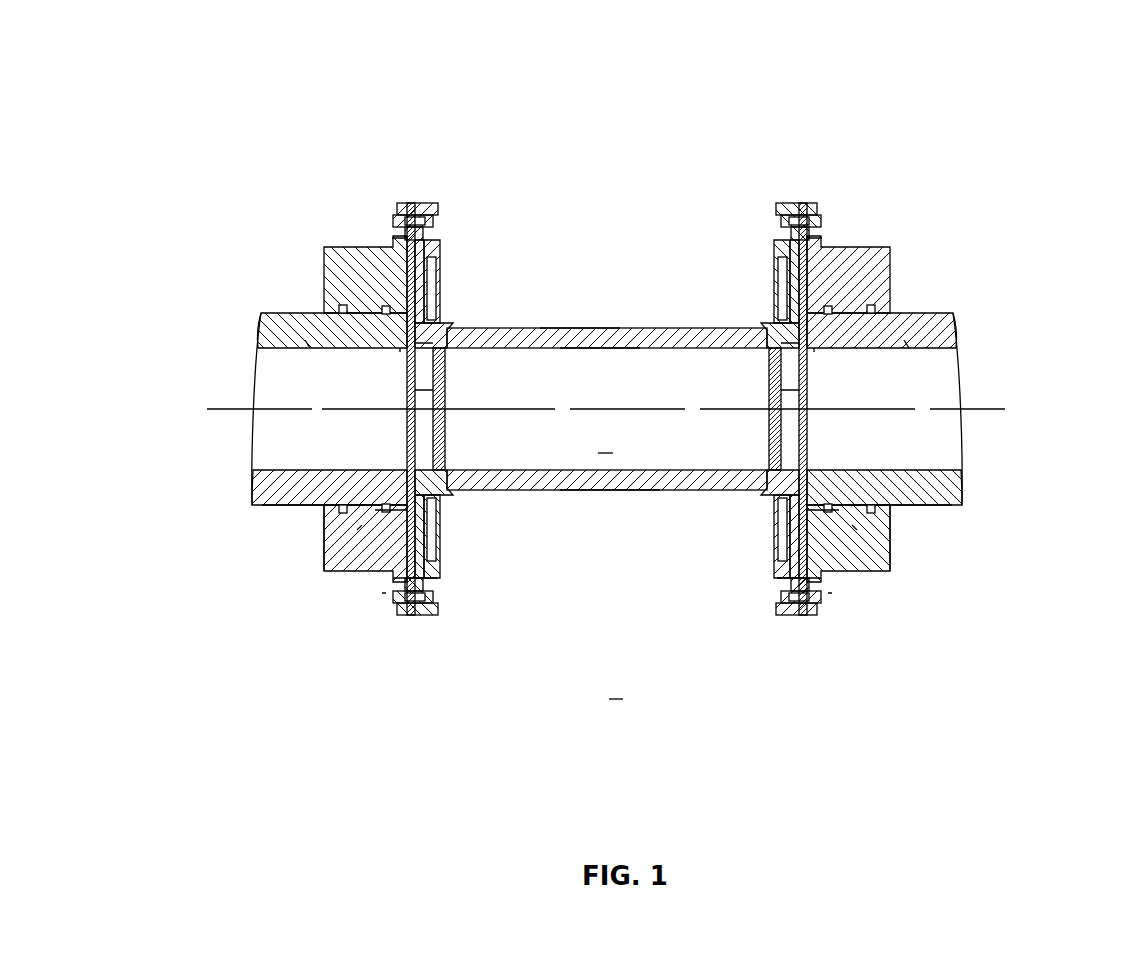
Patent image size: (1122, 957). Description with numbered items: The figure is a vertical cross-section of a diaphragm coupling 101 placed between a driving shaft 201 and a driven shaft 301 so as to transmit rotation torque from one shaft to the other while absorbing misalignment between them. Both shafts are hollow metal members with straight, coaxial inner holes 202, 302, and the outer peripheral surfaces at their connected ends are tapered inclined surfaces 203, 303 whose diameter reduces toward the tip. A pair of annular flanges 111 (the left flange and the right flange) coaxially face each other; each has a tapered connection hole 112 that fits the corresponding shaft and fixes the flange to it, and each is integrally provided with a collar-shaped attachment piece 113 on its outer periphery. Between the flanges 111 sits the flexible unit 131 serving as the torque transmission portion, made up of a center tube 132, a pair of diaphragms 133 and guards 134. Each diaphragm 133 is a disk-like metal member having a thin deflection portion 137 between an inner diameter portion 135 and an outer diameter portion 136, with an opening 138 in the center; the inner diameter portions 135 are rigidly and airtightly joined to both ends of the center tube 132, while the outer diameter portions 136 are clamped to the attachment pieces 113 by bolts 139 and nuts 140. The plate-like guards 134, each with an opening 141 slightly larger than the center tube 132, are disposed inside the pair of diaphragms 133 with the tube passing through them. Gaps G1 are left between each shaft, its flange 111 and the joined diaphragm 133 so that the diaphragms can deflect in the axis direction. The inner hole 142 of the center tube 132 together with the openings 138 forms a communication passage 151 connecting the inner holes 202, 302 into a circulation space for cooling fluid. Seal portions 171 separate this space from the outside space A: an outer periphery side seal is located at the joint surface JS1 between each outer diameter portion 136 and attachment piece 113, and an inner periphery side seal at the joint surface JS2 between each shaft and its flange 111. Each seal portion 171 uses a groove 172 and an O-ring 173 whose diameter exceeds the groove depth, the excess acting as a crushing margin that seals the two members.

The diaphragm coupling 101 is at (758, 122).
The flange 111 is at (346, 247).
The connection hole 112 is at (323, 506).
The attachment piece 113 is at (389, 238).
The flexible unit 131 is at (635, 168).
The center tube 132 is at (607, 492).
The diaphragm 133 is at (450, 538).
The guard 134 is at (442, 268).
The inner diameter portion 135 is at (452, 490).
The outer diameter portion 136 is at (415, 618).
The deflection portion 137 is at (442, 292).
The opening 138 is at (432, 390).
The bolt 139 is at (393, 600).
The nut 140 is at (435, 598).
The opening 141 is at (437, 343).
The inner hole 142 is at (572, 346).
The communication passage 151 is at (600, 368).
The seal portion 171 is at (955, 603).
The groove 172 is at (383, 306).
The O-ring 173 is at (310, 349).
The driving shaft 201 is at (268, 312).
The inner hole 202 is at (262, 458).
The inclined surface 203 is at (325, 530).
The driven shaft 301 is at (934, 382).
The inner hole 302 is at (937, 480).
The inclined surface 303 is at (885, 518).
The joint surface JS1 is at (392, 238).
The joint surface JS2 is at (375, 510).
The gap G1 is at (405, 348).
The fluid region E is at (605, 443).
The outside space A is at (616, 689).